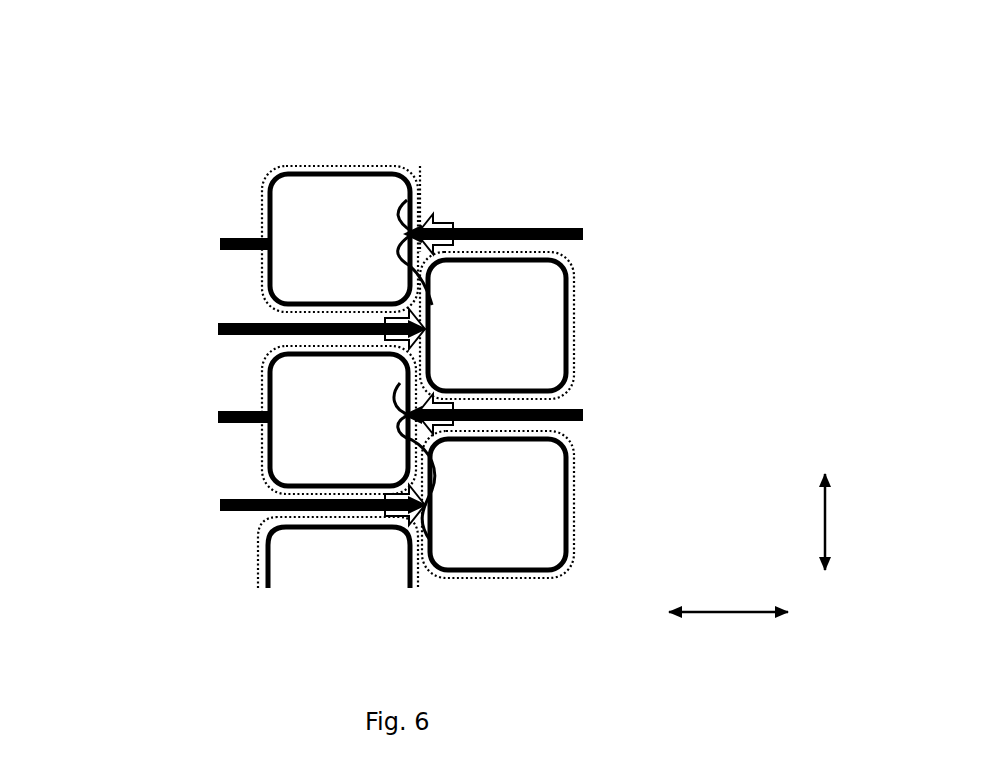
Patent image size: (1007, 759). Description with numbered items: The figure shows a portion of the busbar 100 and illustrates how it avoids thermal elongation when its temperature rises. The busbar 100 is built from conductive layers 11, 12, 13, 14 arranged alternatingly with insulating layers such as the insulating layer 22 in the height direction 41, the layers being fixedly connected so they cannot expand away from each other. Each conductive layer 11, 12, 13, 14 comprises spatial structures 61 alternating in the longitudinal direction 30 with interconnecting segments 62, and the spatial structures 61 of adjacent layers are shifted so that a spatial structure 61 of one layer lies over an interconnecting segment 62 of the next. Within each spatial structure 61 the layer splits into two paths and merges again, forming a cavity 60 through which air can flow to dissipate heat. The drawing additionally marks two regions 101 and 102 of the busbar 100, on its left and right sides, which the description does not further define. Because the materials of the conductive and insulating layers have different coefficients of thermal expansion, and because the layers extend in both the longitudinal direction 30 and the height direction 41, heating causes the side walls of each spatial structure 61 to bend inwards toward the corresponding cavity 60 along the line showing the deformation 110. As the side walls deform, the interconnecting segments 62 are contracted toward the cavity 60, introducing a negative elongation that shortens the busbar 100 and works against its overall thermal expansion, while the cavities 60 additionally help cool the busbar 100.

The conductive layer 11 is at (218, 244).
The conductive layer 12 is at (216, 329).
The conductive layer 13 is at (216, 417).
The conductive layer 14 is at (246, 514).
The insulating layer 22 is at (256, 285).
The longitudinal direction 30 is at (728, 631).
The height direction 41 is at (847, 522).
The cavity 60 is at (366, 194).
The spatial structure 61 is at (308, 128).
The interconnecting segment 62 is at (518, 194).
The busbar 100 is at (680, 138).
The first cell stack 101 is at (106, 449).
The second cell stack 102 is at (720, 345).
The deformation 110 is at (432, 530).